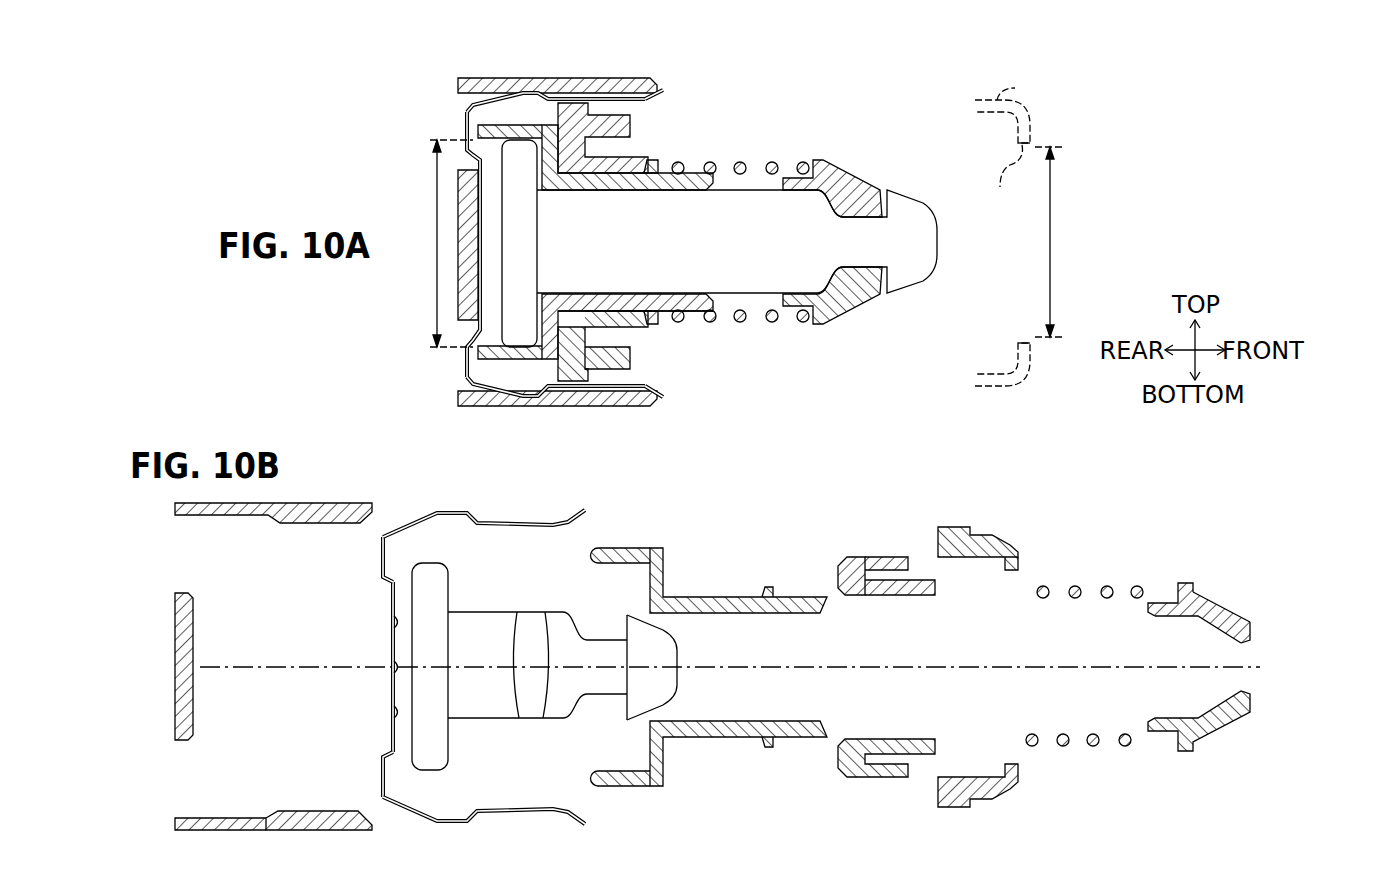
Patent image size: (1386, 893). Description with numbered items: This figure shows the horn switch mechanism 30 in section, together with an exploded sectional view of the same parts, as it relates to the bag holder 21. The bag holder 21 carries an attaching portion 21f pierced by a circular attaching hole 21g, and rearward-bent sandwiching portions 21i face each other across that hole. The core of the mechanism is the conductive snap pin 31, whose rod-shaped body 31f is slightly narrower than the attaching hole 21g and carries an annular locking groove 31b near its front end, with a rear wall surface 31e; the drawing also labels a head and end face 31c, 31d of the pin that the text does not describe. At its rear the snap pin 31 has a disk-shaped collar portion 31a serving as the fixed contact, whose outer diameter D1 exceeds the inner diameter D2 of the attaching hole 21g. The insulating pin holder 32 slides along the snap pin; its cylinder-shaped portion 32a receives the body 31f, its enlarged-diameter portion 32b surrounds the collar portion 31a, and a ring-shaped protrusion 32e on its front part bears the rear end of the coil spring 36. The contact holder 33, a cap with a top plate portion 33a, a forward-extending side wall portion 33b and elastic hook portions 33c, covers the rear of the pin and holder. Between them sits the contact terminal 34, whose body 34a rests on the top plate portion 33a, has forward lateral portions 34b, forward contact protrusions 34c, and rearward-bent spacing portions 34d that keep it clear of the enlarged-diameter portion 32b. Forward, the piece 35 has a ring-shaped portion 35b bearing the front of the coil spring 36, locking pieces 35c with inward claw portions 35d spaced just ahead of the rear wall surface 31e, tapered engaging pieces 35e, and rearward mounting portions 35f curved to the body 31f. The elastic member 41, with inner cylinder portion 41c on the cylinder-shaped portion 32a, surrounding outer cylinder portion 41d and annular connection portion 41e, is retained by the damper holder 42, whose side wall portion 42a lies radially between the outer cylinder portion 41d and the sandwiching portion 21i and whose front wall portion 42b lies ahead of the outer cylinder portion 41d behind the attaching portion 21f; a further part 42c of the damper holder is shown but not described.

In FIG. 10A, the horn switch mechanism 30 is at (443, 96).
In FIG. 10B, the horn switch mechanism 30 is at (396, 514).
In FIG. 10A, the bag holder 21 is at (1079, 227).
In FIG. 10A, the attaching portion 21f is at (1033, 125).
In FIG. 10A, the attaching hole 21g is at (1003, 180).
In FIG. 10A, the sandwiching portion 21i is at (1022, 93).
In FIG. 10A, the snap pin 31 is at (719, 239).
In FIG. 10B, the snap pin 31 is at (576, 649).
In FIG. 10A, the collar portion 31a is at (528, 248).
In FIG. 10B, the collar portion 31a is at (433, 577).
In FIG. 10B, the locking groove 31b is at (610, 692).
In FIG. 10B, the contact head 31c is at (680, 648).
In FIG. 10B, the head end face 31d is at (626, 622).
In FIG. 10B, the rear wall surface 31e is at (582, 718).
In FIG. 10A, the body 31f is at (728, 207).
In FIG. 10B, the body 31f is at (485, 612).
In FIG. 10A, the pin holder 32 is at (531, 266).
In FIG. 10B, the pin holder 32 is at (625, 512).
In FIG. 10A, the cylinder-shaped portion 32a is at (605, 190).
In FIG. 10B, the cylinder-shaped portion 32a is at (707, 596).
In FIG. 10A, the enlarged-diameter portion 32b is at (473, 378).
In FIG. 10B, the enlarged-diameter portion 32b is at (641, 547).
In FIG. 10A, the ring-shaped protrusion 32e is at (648, 162).
In FIG. 10B, the ring-shaped protrusion 32e is at (764, 588).
In FIG. 10A, the contact holder 33 is at (557, 266).
In FIG. 10B, the contact holder 33 is at (242, 666).
In FIG. 10B, the top plate portion 33a is at (185, 640).
In FIG. 10A, the side wall portion 33b is at (492, 410).
In FIG. 10B, the side wall portion 33b is at (212, 818).
In FIG. 10B, the hook portion 33c is at (350, 524).
In FIG. 10A, the contact terminal 34 is at (482, 218).
In FIG. 10B, the contact terminal 34 is at (450, 667).
In FIG. 10B, the body 34a is at (392, 645).
In FIG. 10A, the lateral portion 34b is at (662, 392).
In FIG. 10B, the lateral portion 34b is at (503, 525).
In FIG. 10B, the contact protrusion 34c is at (397, 710).
In FIG. 10A, the spacing portion 34d is at (465, 126).
In FIG. 10B, the spacing portion 34d is at (381, 553).
In FIG. 10A, the piece 35 is at (878, 189).
In FIG. 10B, the piece 35 is at (1215, 652).
In FIG. 10B, the ring-shaped portion 35b is at (1185, 581).
In FIG. 10B, the locking piece 35c is at (1205, 617).
In FIG. 10B, the claw portion 35d is at (1255, 624).
In FIG. 10B, the engaging piece 35e is at (1203, 592).
In FIG. 10B, the mounting portion 35f is at (1160, 731).
In FIG. 10A, the coil spring 36 is at (763, 328).
In FIG. 10B, the coil spring 36 is at (1045, 600).
In FIG. 10A, the elastic member 41 is at (555, 127).
In FIG. 10B, the elastic member 41 is at (773, 512).
In FIG. 10A, the inner cylinder portion 41c is at (627, 295).
In FIG. 10B, the inner cylinder portion 41c is at (922, 580).
In FIG. 10B, the outer cylinder portion 41d is at (880, 557).
In FIG. 10B, the connection portion 41e is at (838, 578).
In FIG. 10A, the damper holder 42 is at (557, 367).
In FIG. 10B, the damper holder 42 is at (1078, 512).
In FIG. 10A, the side wall portion 42a is at (607, 397).
In FIG. 10B, the side wall portion 42a is at (993, 532).
In FIG. 10A, the front wall portion 42b is at (640, 348).
In FIG. 10B, the front wall portion 42b is at (1010, 563).
In FIG. 10B, the second insulator lower portion 42c is at (1012, 762).
In FIG. 10A, the outer diameter of the collar portion D1 is at (435, 185).
In FIG. 10A, the inner diameter of the attaching hole D2 is at (1053, 247).